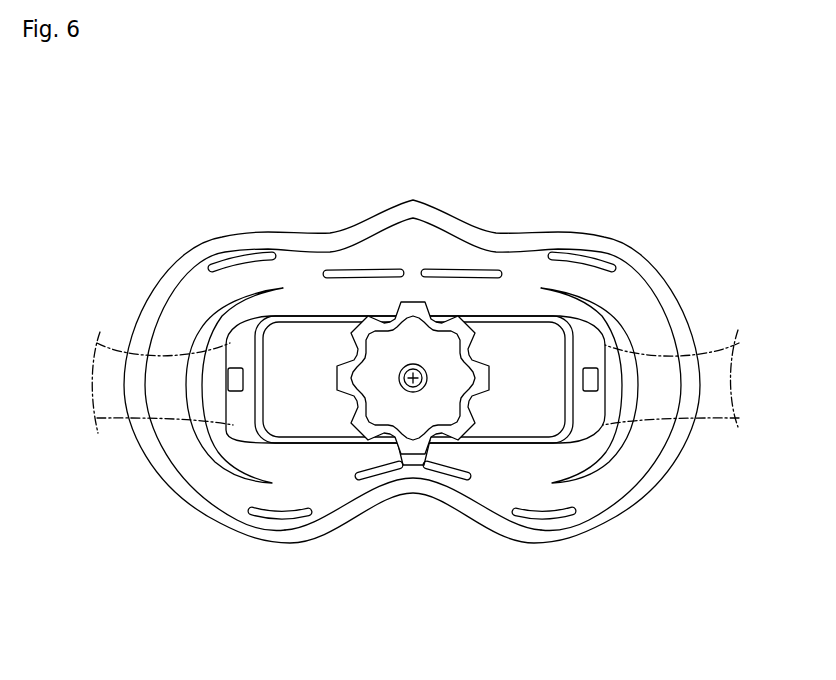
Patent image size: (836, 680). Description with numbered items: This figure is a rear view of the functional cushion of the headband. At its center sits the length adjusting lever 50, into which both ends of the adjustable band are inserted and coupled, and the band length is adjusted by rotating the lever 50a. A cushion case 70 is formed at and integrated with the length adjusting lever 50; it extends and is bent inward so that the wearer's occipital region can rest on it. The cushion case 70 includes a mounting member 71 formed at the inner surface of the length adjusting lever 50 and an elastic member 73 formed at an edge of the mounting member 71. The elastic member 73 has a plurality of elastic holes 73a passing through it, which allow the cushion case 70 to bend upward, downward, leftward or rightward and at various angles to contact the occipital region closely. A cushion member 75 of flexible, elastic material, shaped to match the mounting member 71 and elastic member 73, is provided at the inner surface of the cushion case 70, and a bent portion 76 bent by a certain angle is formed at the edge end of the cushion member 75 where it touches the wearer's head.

The cushion case 70 is at (603, 195).
The mounting member 71 is at (540, 457).
The elastic member 73 is at (627, 466).
The elastic hole 73a is at (338, 278).
The cushion member 75 is at (468, 518).
The bent portion 76 is at (170, 480).
The length adjusting lever 50 is at (568, 317).
The lever 50a is at (392, 330).